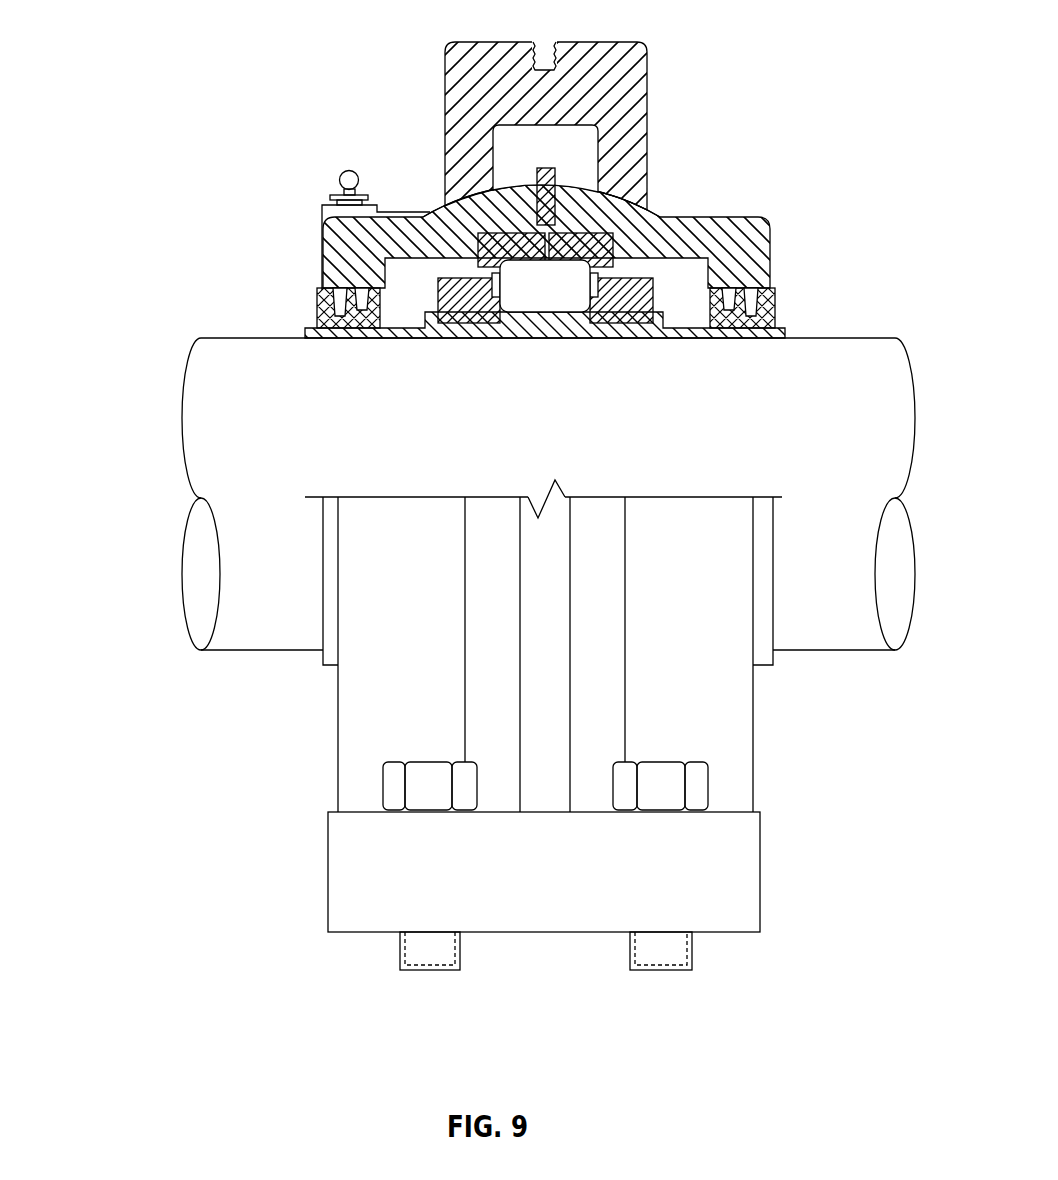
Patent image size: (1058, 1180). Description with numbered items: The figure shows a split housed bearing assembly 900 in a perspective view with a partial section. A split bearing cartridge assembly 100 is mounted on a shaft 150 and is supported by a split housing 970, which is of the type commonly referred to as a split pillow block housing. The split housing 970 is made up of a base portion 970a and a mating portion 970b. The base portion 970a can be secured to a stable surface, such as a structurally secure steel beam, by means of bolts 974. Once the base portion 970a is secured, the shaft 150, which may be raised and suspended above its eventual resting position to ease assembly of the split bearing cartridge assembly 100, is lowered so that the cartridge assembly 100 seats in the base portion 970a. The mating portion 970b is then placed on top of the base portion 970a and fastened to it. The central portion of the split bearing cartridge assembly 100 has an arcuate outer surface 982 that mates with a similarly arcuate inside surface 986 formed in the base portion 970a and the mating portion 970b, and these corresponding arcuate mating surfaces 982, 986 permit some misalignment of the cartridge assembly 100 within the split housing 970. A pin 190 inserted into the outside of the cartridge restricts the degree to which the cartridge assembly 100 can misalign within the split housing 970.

The split housed bearing assembly 900 is at (285, 40).
The split housing 970 is at (459, 499).
The base portion 970a is at (747, 883).
The mating portion 970b is at (625, 62).
The bolts 974 is at (388, 790).
The outer surface 982 is at (462, 205).
The inside surface 986 is at (637, 217).
The pin 190 is at (553, 168).
The split bearing cartridge assembly 100 is at (590, 236).
The shaft 150 is at (827, 352).